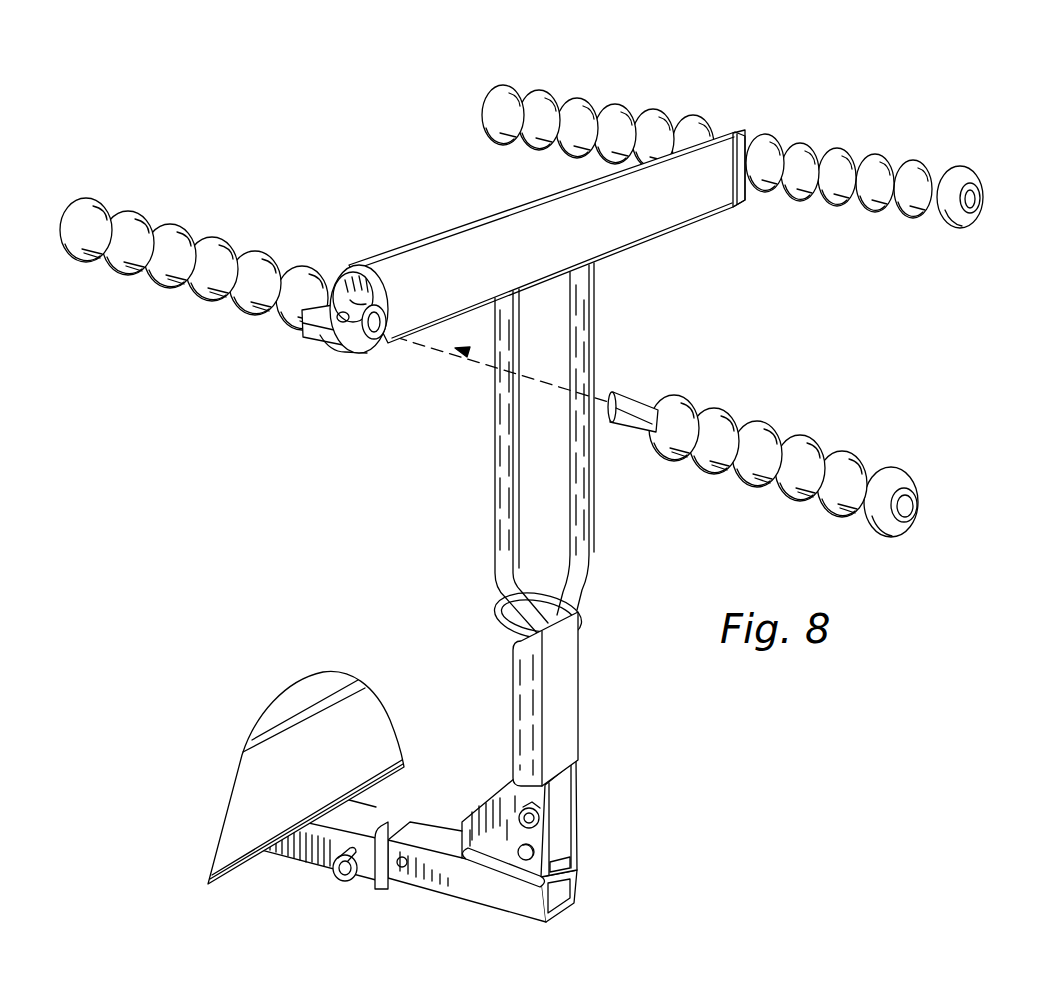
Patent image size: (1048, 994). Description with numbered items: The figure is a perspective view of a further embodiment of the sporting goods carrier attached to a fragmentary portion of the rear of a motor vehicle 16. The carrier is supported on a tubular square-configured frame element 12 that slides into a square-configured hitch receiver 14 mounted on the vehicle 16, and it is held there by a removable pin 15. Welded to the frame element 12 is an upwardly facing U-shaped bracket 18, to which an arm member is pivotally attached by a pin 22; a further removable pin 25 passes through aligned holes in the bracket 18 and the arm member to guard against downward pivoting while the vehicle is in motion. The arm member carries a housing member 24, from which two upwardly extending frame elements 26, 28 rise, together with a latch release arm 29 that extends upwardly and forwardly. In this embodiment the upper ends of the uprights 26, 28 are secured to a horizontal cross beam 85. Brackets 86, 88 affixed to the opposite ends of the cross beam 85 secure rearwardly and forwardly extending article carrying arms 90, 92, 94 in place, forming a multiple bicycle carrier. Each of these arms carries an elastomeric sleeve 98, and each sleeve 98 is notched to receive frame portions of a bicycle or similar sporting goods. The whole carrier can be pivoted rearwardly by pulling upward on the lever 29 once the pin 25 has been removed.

The frame element 12 is at (435, 836).
The hitch receiver 14 is at (305, 838).
The removable pin 15 is at (332, 880).
The motor vehicle 16 is at (332, 683).
The U-shaped bracket 18 is at (580, 783).
The pin 22 is at (534, 849).
The housing member 24 is at (556, 671).
The removable pin 25 is at (541, 809).
The frame element 26 is at (586, 520).
The frame element 28 is at (496, 510).
The latch release arm 29 is at (497, 597).
The cross beam 85 is at (656, 229).
The bracket 86 is at (741, 133).
The bracket 88 is at (352, 266).
The arm 90 is at (984, 190).
The arm 92 is at (634, 403).
The arm 94 is at (320, 284).
The elastomeric sleeve 98 is at (212, 239).